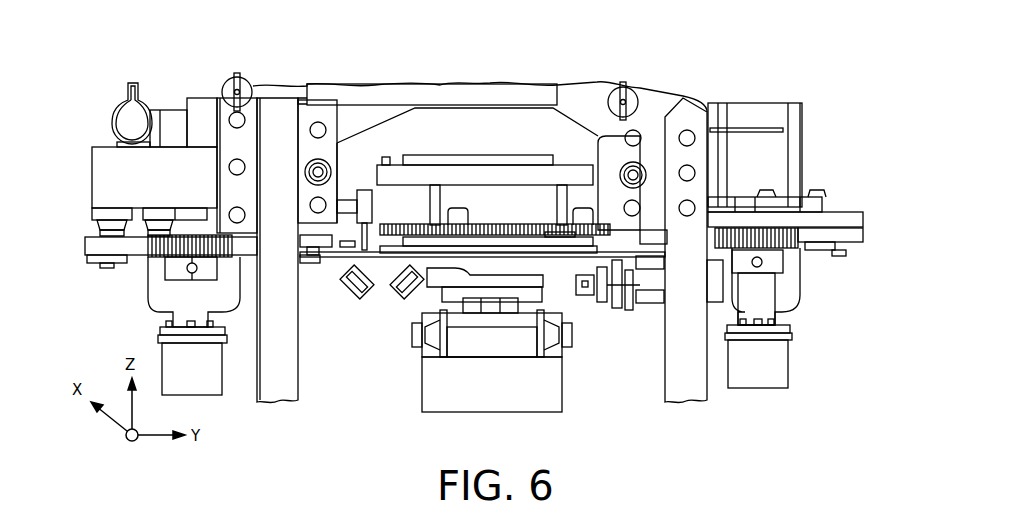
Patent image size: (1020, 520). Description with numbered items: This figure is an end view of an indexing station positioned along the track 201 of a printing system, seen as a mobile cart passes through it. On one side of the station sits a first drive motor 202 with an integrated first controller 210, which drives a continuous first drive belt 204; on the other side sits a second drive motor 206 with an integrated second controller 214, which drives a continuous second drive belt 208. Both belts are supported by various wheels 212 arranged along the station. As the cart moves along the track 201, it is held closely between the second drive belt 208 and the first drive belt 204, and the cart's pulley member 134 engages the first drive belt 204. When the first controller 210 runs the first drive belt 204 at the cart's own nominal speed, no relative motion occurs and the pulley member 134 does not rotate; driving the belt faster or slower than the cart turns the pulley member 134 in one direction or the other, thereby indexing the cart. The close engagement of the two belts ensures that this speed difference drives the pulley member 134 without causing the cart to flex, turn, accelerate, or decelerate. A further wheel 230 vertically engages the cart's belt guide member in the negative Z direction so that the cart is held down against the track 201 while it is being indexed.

The pulley member 134 is at (603, 195).
The track 201 is at (562, 398).
The first drive motor 202 is at (788, 149).
The first drive belt 204 is at (636, 192).
The second drive motor 206 is at (108, 92).
The second drive belt 208 is at (140, 255).
The first controller 210 is at (803, 150).
The wheels 212 is at (318, 265).
The second controller 214 is at (150, 135).
The further wheel 230 is at (365, 188).